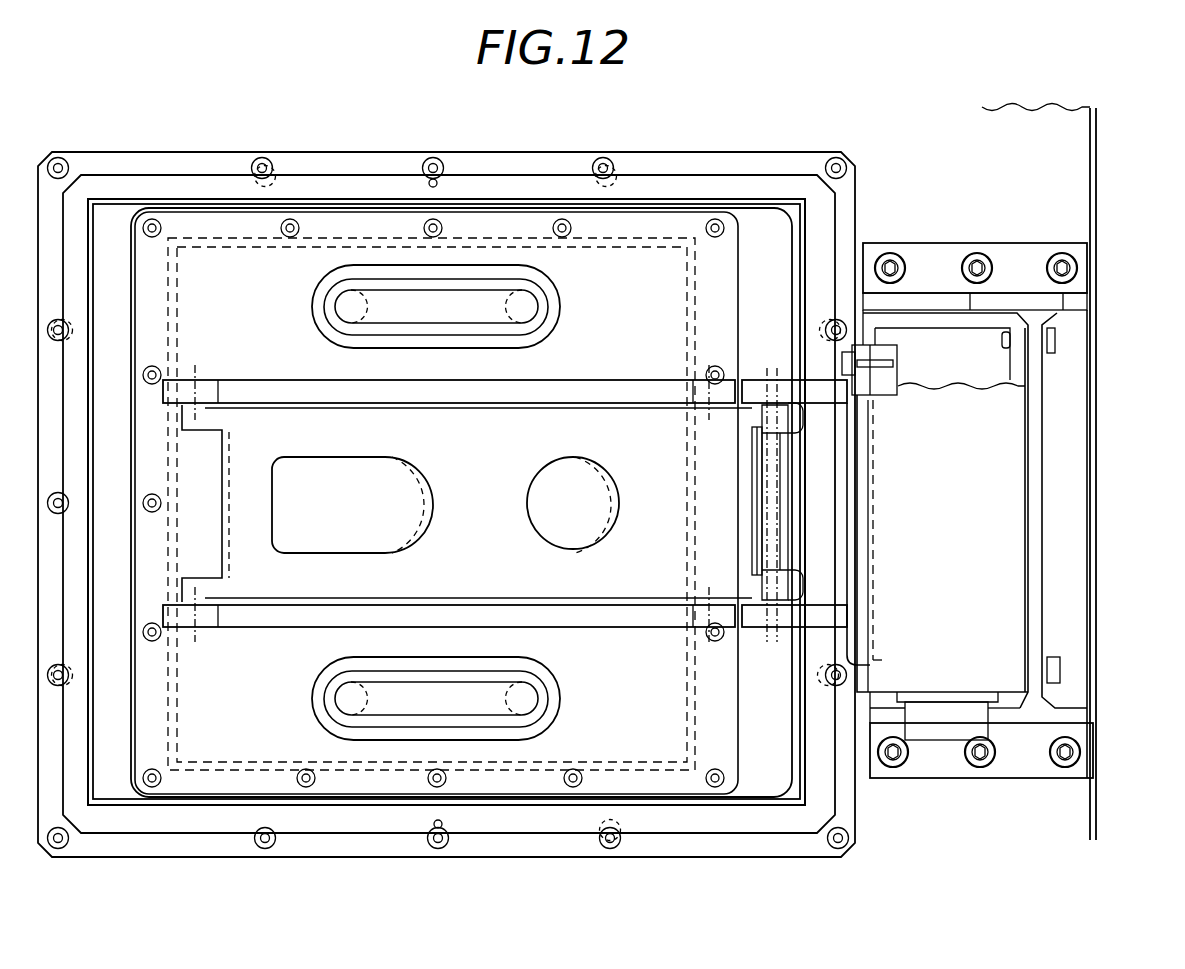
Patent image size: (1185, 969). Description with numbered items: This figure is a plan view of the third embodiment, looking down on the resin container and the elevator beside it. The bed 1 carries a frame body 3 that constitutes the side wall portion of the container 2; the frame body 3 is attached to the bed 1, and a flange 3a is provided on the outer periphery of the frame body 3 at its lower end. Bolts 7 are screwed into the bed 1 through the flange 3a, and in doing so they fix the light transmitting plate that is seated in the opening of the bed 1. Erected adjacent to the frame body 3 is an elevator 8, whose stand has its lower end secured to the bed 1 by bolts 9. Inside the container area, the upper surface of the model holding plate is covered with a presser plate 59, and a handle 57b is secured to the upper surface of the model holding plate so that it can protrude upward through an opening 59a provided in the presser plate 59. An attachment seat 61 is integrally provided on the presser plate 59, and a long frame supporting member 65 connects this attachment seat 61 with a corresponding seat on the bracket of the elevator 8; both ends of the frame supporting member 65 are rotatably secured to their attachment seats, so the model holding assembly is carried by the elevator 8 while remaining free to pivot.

The bed 1 is at (1080, 152).
The container 2 is at (601, 860).
The frame body 3 is at (519, 808).
The flange 3a is at (403, 846).
The bolts 7 is at (273, 845).
The elevator 8 is at (1104, 418).
The bolts 9 is at (892, 252).
The handle 57b is at (500, 322).
The presser plate 59 is at (643, 262).
The opening 59a is at (537, 304).
The attachment seat 61 is at (205, 395).
The long frame supporting member 65 is at (290, 437).